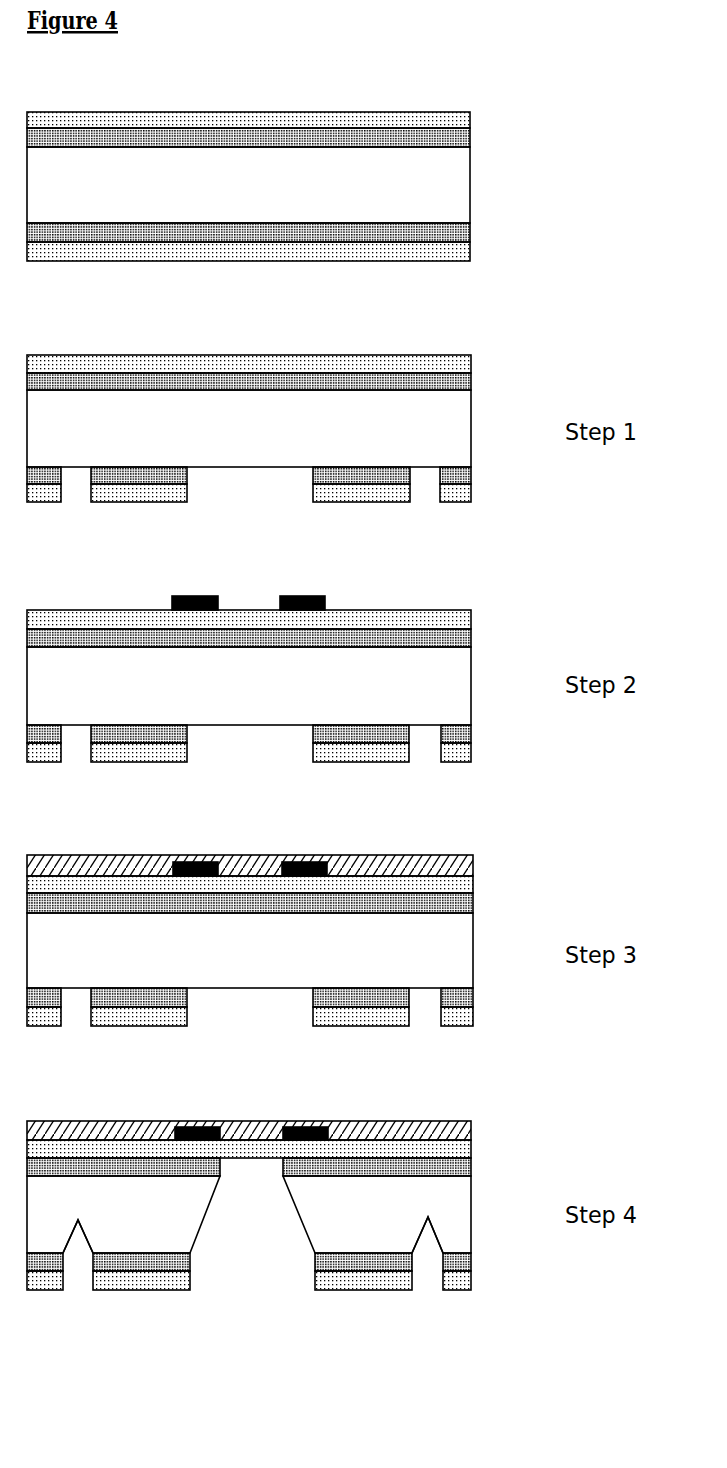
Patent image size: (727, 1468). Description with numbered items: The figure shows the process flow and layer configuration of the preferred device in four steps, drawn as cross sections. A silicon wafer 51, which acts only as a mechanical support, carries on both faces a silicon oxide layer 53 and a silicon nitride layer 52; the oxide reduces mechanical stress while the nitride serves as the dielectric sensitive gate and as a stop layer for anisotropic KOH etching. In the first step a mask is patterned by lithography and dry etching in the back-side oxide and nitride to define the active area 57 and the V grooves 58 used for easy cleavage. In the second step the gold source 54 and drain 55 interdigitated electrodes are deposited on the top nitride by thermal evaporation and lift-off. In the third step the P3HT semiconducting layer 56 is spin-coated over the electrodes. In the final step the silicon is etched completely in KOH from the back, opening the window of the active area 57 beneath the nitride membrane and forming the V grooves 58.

The silicon wafer 51 is at (448, 197).
The silicon nitride layer 52 is at (450, 138).
The silicon oxide layer 53 is at (450, 114).
The gold source electrode 54 is at (196, 596).
The gold drain electrode 55 is at (303, 596).
The P3HT semiconducting layer 56 is at (455, 863).
The active area 57 is at (250, 1247).
The V grooves 58 is at (79, 1252).